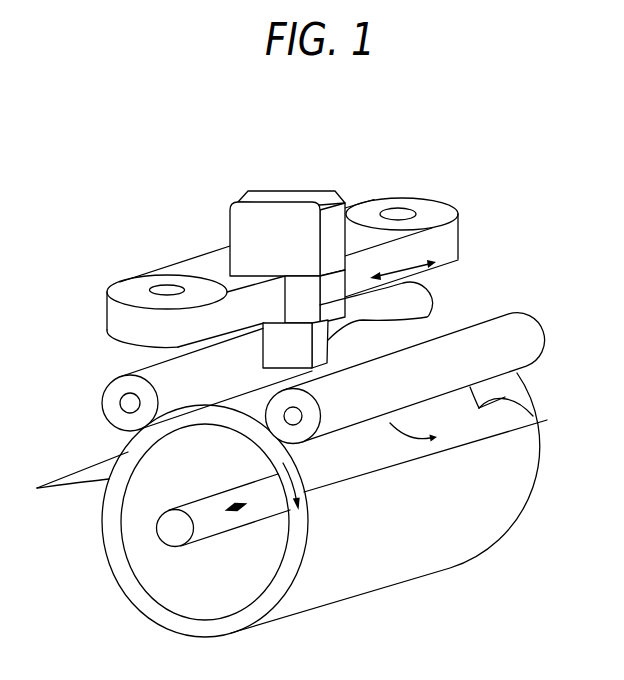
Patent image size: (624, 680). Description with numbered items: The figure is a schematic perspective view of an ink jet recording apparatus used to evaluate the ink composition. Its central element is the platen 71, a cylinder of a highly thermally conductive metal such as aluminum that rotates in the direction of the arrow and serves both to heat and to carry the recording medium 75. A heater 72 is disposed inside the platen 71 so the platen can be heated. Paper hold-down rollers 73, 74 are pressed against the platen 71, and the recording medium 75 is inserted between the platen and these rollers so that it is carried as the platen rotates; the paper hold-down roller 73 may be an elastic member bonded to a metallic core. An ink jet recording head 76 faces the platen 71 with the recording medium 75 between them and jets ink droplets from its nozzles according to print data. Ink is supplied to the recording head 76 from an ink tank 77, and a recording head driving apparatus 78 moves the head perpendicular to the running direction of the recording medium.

The platen 71 is at (495, 528).
The heater 72 is at (170, 531).
The paper hold-down roller 73 is at (120, 394).
The paper hold-down roller 74 is at (537, 314).
The recording medium 75 is at (543, 408).
The ink jet recording head 76 is at (430, 318).
The ink tank 77 is at (273, 190).
The recording head driving apparatus 78 is at (400, 197).